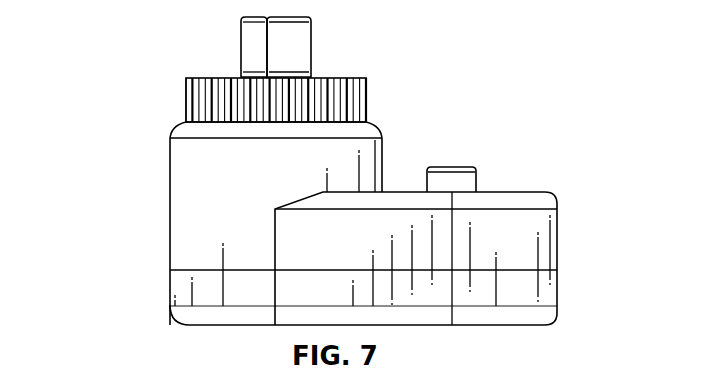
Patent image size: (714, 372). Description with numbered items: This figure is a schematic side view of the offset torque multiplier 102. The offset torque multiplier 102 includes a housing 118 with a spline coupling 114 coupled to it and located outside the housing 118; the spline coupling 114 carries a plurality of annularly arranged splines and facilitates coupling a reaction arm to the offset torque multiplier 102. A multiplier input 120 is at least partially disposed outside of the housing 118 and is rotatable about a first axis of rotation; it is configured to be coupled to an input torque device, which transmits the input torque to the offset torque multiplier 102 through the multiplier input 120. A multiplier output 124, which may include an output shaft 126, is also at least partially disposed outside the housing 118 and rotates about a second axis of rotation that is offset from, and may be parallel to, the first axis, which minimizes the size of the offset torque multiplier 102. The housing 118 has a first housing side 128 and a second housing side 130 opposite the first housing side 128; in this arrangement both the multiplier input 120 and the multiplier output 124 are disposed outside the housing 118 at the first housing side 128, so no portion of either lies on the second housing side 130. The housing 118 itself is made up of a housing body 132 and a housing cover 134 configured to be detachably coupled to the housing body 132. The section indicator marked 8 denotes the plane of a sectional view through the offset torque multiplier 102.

The section line 8- 8 is at (665, 147).
The offset torque multiplier 102 is at (103, 177).
The spline coupling 114 is at (186, 100).
The housing 118 is at (161, 232).
The multiplier input 120 is at (486, 176).
The multiplier output 124 is at (320, 40).
The output shaft 126 is at (240, 50).
The first housing side 128 is at (450, 130).
The second housing side 130 is at (192, 340).
The housing body 132 is at (557, 252).
The housing cover 134 is at (547, 318).